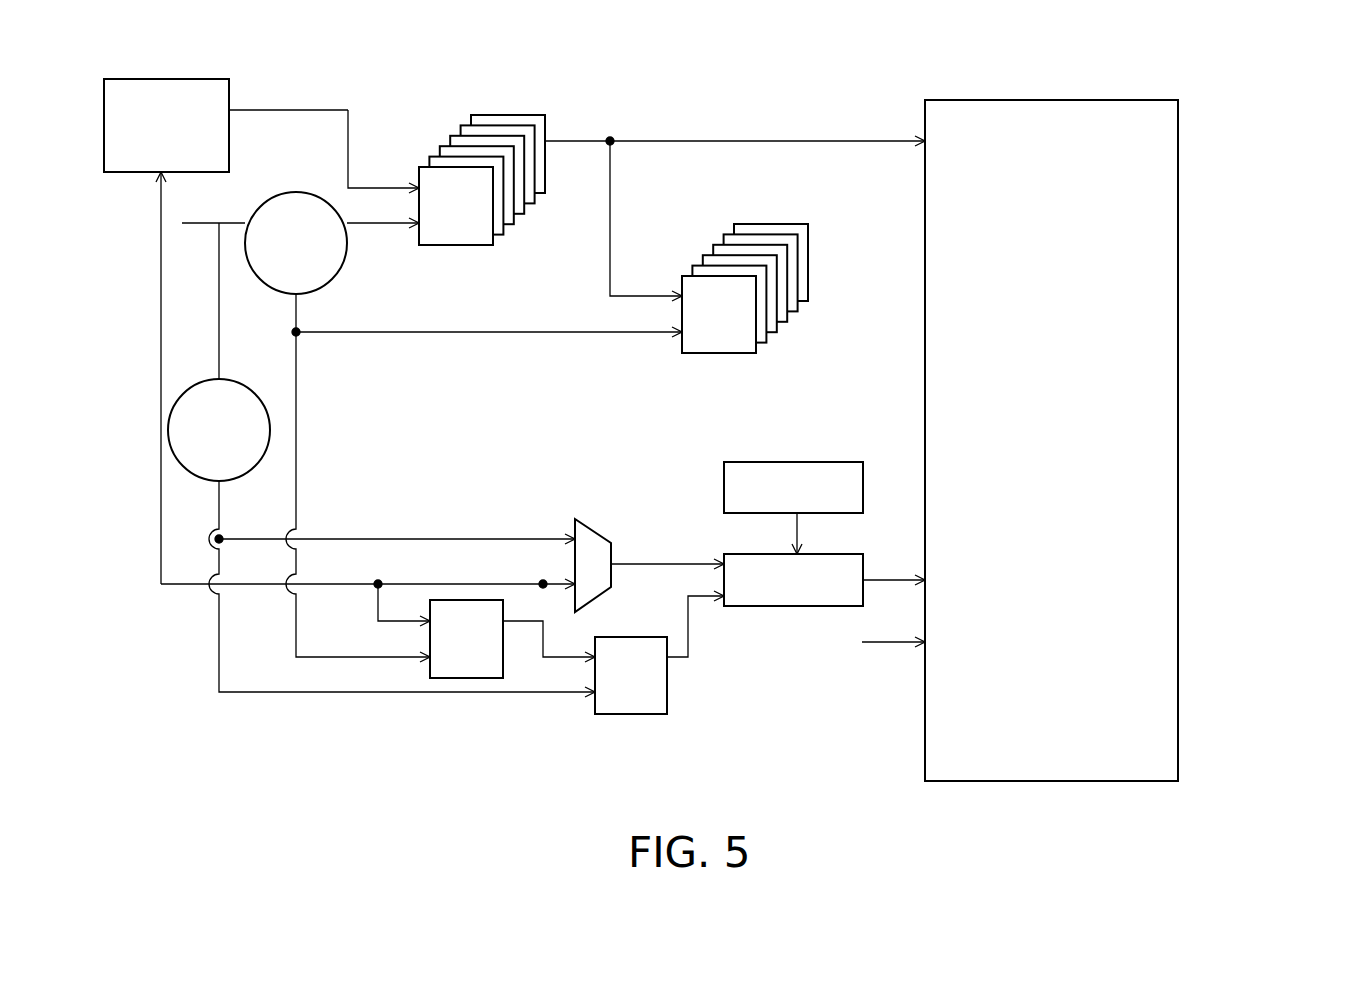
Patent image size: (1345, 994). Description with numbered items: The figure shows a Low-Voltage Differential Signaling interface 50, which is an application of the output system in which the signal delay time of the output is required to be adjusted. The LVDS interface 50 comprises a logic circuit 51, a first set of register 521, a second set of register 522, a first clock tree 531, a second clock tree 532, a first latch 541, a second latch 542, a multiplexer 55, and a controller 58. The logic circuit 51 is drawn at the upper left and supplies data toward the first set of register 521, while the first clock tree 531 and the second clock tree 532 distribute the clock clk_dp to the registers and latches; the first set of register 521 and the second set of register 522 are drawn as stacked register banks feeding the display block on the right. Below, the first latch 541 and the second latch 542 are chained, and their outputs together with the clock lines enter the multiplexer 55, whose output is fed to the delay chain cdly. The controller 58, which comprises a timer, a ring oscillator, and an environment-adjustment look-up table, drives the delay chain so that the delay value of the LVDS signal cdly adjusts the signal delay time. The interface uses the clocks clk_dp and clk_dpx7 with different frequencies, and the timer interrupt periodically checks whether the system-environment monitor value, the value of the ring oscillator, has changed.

The LVDS interface 50 is at (1247, 100).
The logic circuit 51 is at (230, 93).
The first set of register 521 is at (506, 115).
The second set of register 522 is at (778, 224).
The first clock tree 531 is at (343, 268).
The second clock tree 532 is at (259, 361).
The multiplexer 55 is at (592, 528).
The controller 58 is at (863, 488).
The first latch 541 is at (463, 678).
The second latch 542 is at (630, 714).